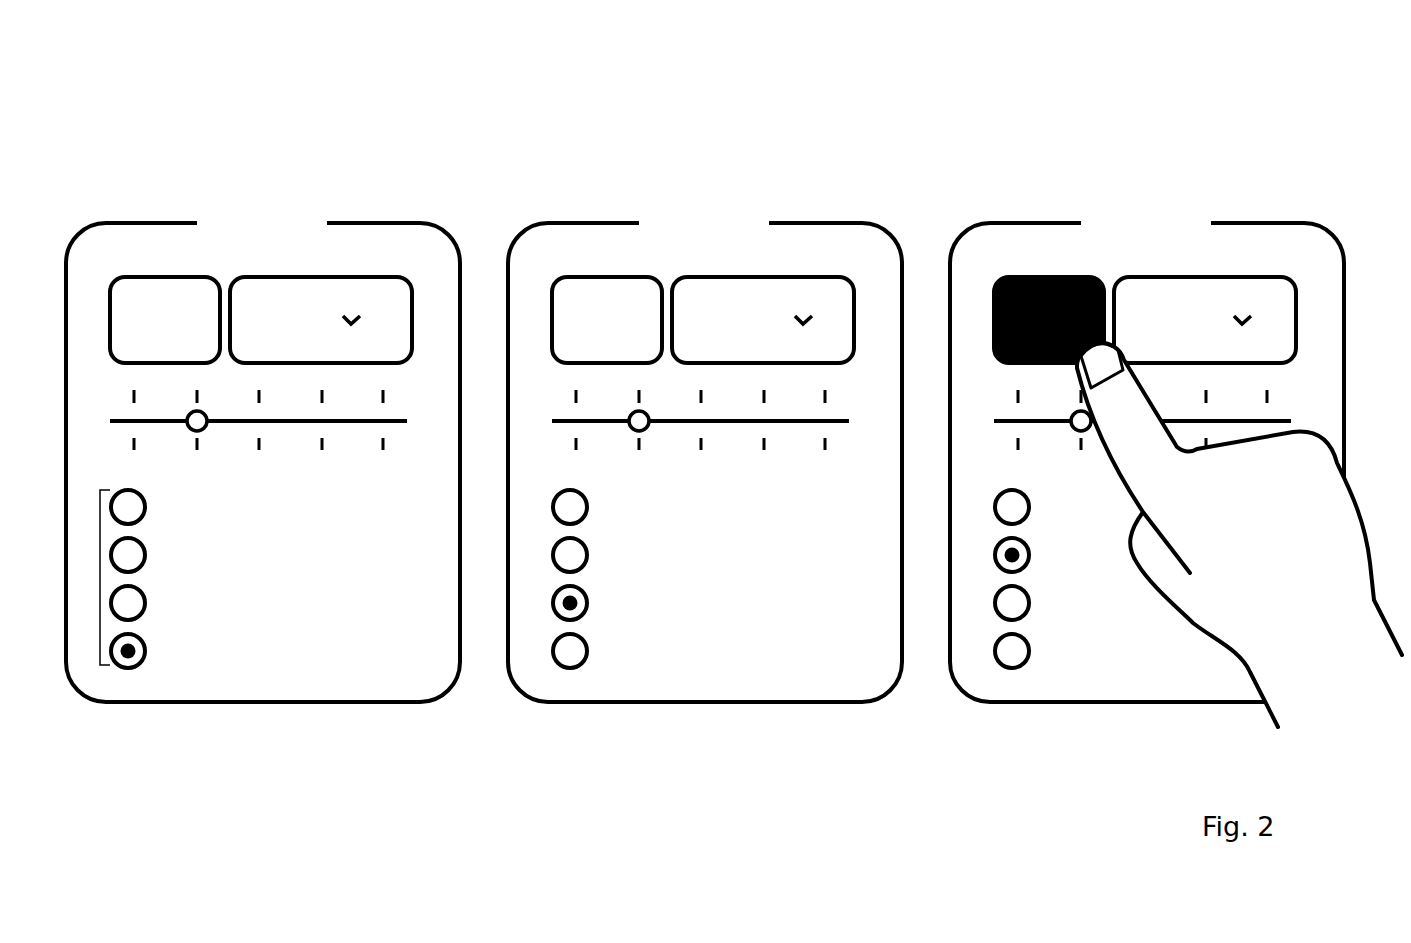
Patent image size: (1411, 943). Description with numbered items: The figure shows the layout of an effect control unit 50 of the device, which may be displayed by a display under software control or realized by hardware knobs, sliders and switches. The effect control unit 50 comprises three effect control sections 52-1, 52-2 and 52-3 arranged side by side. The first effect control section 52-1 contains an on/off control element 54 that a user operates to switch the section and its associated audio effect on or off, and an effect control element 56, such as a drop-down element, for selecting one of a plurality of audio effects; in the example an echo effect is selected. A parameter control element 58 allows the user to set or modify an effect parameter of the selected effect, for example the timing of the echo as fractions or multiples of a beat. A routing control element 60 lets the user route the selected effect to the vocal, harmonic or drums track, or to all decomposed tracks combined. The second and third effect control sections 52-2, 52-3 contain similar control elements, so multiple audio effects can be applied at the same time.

The effect control unit 50 is at (212, 118).
The first effect control section 52-1 is at (427, 250).
The second effect control section 52-2 is at (834, 248).
The third effect control section 52-3 is at (1242, 240).
The on/off control element 54 is at (122, 290).
The effect control element 56 is at (312, 300).
The parameter control element 58 is at (207, 428).
The routing control element 60 is at (100, 577).